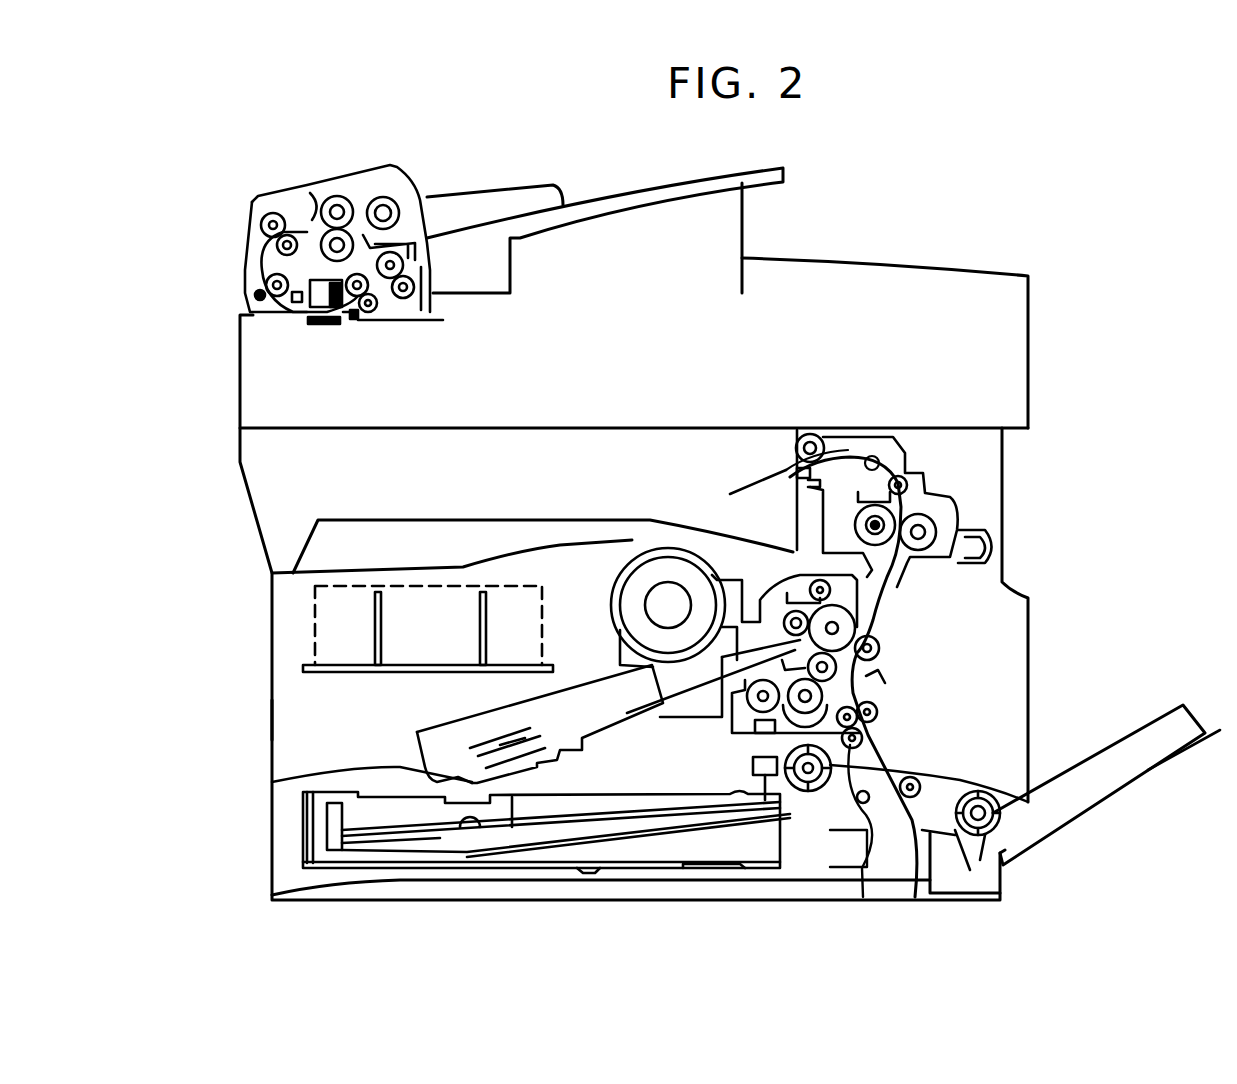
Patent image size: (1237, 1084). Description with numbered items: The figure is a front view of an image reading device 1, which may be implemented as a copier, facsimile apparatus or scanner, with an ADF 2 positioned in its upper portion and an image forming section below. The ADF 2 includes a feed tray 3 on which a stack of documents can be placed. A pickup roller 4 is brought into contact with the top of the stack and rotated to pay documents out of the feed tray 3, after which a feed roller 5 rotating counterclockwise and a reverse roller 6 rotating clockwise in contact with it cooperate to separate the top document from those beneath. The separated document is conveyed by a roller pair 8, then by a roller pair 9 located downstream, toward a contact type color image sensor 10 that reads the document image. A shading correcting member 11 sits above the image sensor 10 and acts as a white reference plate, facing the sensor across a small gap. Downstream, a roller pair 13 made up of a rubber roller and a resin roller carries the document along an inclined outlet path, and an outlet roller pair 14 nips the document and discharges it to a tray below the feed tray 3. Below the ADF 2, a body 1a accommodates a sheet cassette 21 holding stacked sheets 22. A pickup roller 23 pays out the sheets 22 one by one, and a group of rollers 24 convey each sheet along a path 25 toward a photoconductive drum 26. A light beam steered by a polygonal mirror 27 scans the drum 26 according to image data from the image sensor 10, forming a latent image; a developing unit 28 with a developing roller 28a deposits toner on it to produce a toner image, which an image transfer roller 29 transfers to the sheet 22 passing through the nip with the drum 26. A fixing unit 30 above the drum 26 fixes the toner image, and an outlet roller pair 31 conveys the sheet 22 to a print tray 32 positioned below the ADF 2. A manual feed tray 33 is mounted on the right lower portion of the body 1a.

The image reading device 1 is at (228, 493).
The body 1a is at (272, 722).
The ADF 2 is at (905, 238).
The feed tray 3 is at (592, 198).
The pickup roller 4 is at (387, 207).
The feed roller 5 is at (312, 200).
The reverse roller 6 is at (313, 222).
The roller pair 8 is at (277, 254).
The roller pair 9 is at (247, 290).
The color image sensor 10 is at (327, 324).
The shading correcting member 11 is at (253, 268).
The roller pair 13 is at (350, 320).
The outlet roller pair 14 is at (423, 266).
The sheet cassette 21 is at (380, 882).
The sheets 22 is at (628, 807).
The pickup roller 23 is at (922, 790).
The group of rollers 24 is at (883, 718).
The path 25 is at (873, 733).
The photoconductive drum 26 is at (877, 622).
The polygonal mirror 27 is at (290, 775).
The developing unit 28 is at (727, 718).
The developing roller 28a is at (878, 697).
The image transfer roller 29 is at (872, 632).
The fixing unit 30 is at (927, 517).
The outlet roller pair 31 is at (796, 447).
The print tray 32 is at (413, 520).
The manual feed tray 33 is at (1145, 790).